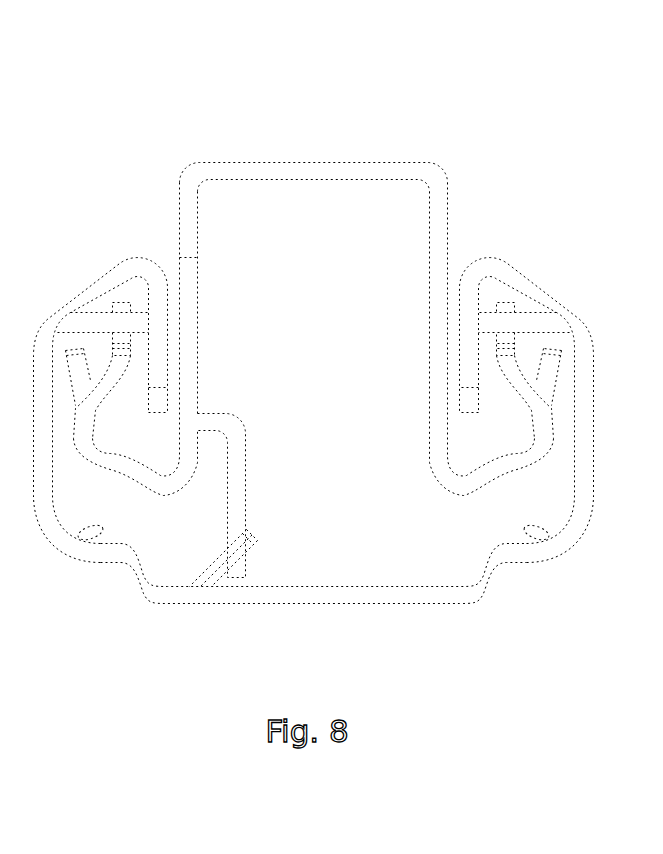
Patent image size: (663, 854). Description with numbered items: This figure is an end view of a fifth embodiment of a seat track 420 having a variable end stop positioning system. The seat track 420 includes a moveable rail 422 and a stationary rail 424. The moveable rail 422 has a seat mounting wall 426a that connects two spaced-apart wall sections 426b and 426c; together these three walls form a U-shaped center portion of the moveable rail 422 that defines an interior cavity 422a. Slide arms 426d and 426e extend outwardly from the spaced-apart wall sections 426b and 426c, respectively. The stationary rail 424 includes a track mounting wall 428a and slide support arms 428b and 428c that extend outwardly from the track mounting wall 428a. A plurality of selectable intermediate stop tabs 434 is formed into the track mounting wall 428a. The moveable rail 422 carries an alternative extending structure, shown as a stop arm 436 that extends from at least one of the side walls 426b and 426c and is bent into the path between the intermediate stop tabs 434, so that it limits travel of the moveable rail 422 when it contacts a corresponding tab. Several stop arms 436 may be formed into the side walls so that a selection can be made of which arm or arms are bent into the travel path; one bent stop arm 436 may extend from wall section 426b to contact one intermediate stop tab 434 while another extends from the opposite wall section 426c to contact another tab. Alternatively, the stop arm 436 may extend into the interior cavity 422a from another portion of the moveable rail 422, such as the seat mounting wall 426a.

The seat track 420 is at (373, 90).
The moveable rail 422 is at (185, 148).
The interior cavity 422a is at (397, 218).
The stationary rail 424 is at (465, 623).
The seat mounting wall 426a is at (303, 162).
The wall section 426b is at (442, 230).
The wall section 426c is at (187, 230).
The slide arm 426d is at (495, 473).
The slide arm 426e is at (118, 460).
The track mounting wall 428a is at (317, 598).
The slide support arm 428b is at (592, 403).
The slide support arm 428c is at (50, 507).
The intermediate stop tab 434 is at (257, 542).
The stop arm 436 is at (233, 485).